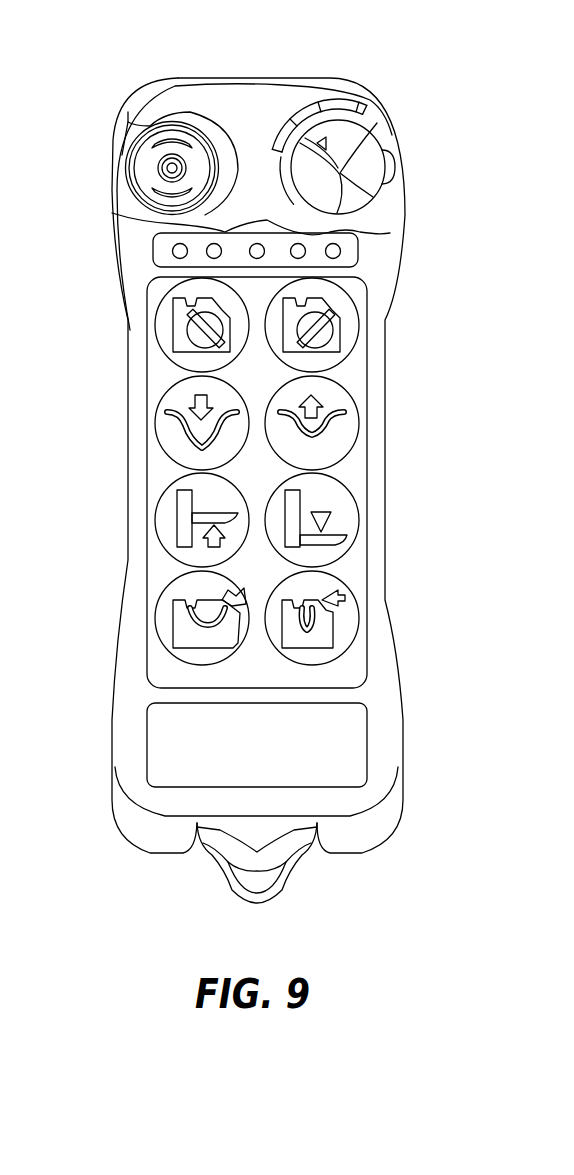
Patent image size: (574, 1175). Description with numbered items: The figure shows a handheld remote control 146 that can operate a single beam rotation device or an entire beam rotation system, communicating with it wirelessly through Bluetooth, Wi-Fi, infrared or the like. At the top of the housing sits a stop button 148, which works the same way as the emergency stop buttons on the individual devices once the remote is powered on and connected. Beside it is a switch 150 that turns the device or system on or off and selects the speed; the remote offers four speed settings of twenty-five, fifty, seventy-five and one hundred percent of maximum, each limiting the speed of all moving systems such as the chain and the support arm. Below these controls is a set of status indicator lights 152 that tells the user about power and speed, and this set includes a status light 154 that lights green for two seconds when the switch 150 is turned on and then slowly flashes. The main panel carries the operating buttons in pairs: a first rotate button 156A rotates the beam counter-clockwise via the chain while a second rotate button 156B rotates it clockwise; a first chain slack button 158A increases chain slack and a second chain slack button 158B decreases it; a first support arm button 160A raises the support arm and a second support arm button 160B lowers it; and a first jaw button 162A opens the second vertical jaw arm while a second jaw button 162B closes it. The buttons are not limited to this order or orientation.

The remote control 146 is at (257, 77).
The stop button 148 is at (160, 137).
The switch 150 is at (345, 150).
The set of status indicator lights 152 is at (308, 248).
The status light 154 is at (247, 242).
The first rotate button 156A is at (168, 315).
The second rotate button 156B is at (340, 297).
The first chain slack button 158A is at (170, 395).
The second chain slack button 158B is at (333, 390).
The first support arm button 160A is at (168, 503).
The second support arm button 160B is at (337, 488).
The first jaw button 162A is at (165, 600).
The second jaw button 162B is at (330, 580).